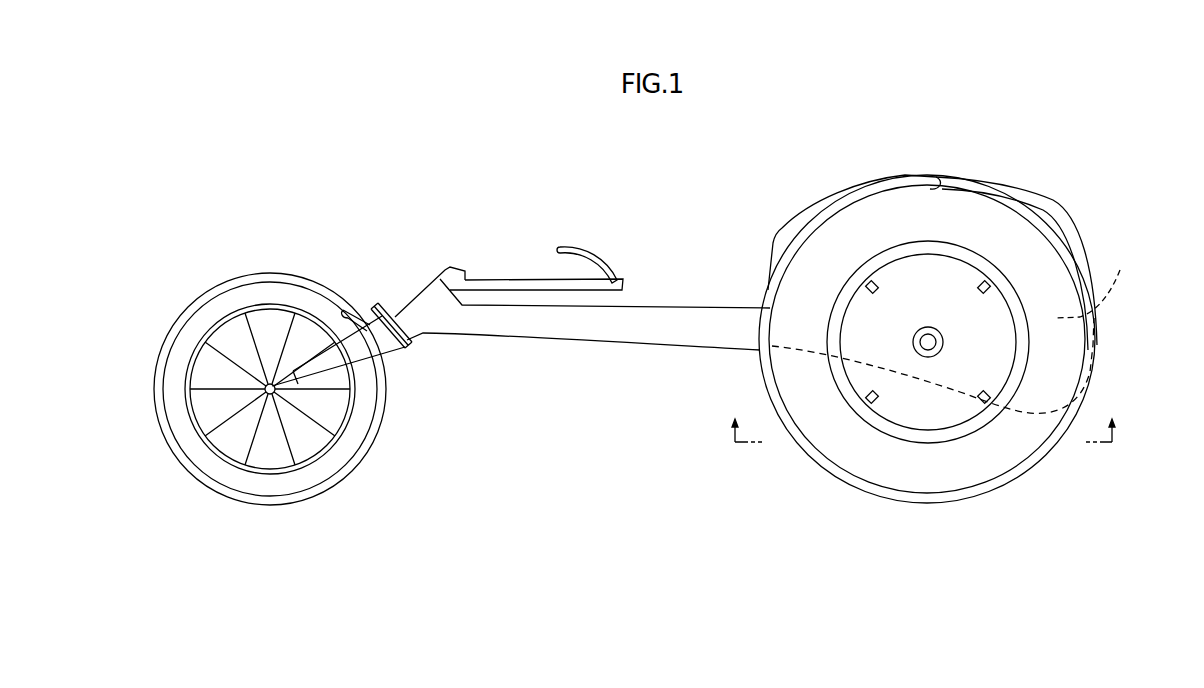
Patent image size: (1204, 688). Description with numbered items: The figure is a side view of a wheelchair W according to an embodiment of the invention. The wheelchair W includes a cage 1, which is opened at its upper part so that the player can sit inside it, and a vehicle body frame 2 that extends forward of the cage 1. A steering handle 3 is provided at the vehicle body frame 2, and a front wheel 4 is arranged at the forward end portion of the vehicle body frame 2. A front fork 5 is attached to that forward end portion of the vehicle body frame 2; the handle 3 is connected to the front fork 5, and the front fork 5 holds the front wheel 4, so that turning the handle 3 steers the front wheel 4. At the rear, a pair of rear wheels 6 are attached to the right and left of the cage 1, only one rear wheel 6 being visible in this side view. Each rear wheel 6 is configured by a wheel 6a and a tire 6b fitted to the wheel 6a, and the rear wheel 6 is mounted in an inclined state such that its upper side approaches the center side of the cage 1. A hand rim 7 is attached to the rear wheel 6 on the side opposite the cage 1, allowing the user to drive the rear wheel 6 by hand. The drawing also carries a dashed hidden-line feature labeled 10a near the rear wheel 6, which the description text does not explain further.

The wheelchair W is at (1104, 146).
The cage 1 is at (1061, 203).
The vehicle body frame 2 is at (668, 306).
The steering handle 3 is at (509, 278).
The front wheel 4 is at (196, 297).
The front fork 5 is at (332, 358).
The rear wheel 6 is at (1016, 227).
The wheel 6a is at (978, 490).
The tire 6b is at (995, 467).
The hand rim 7 is at (939, 246).
The hidden portion 10a is at (1122, 270).